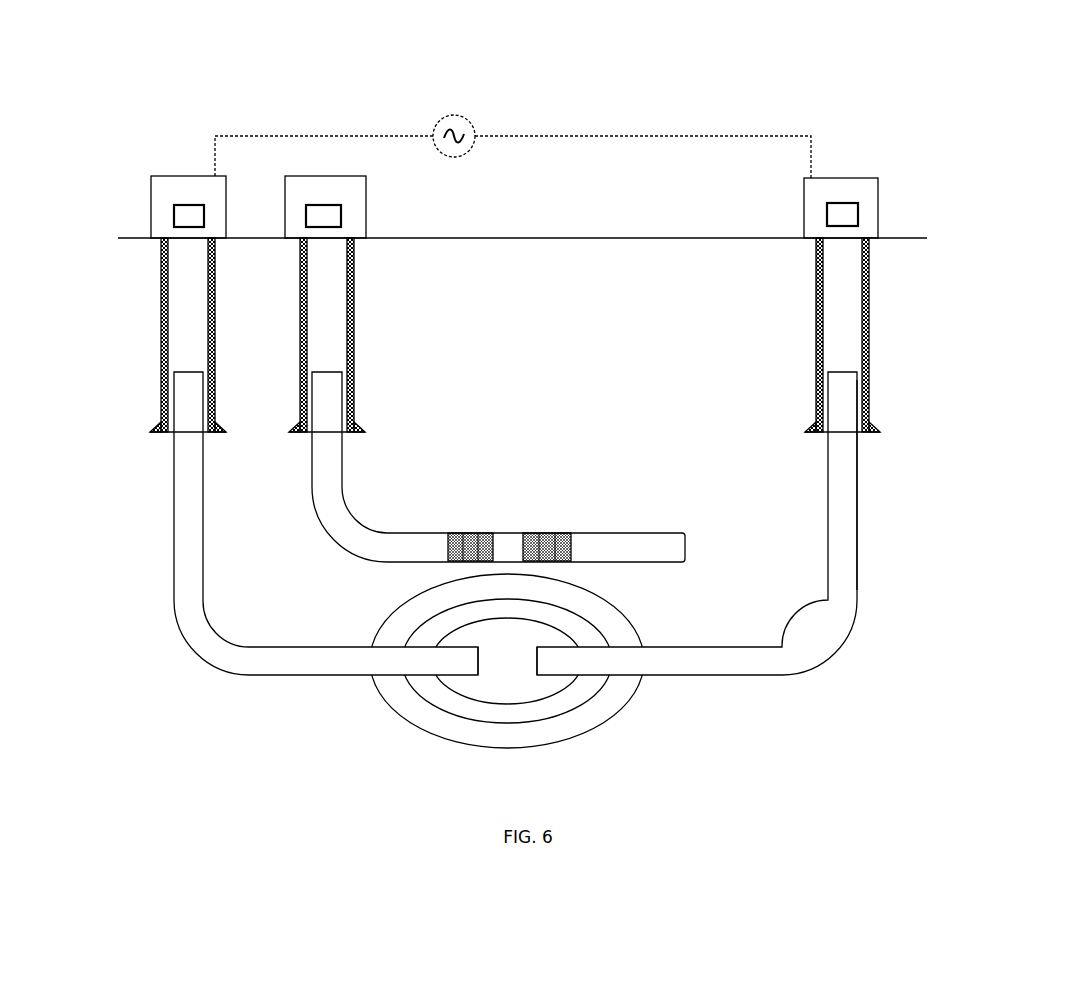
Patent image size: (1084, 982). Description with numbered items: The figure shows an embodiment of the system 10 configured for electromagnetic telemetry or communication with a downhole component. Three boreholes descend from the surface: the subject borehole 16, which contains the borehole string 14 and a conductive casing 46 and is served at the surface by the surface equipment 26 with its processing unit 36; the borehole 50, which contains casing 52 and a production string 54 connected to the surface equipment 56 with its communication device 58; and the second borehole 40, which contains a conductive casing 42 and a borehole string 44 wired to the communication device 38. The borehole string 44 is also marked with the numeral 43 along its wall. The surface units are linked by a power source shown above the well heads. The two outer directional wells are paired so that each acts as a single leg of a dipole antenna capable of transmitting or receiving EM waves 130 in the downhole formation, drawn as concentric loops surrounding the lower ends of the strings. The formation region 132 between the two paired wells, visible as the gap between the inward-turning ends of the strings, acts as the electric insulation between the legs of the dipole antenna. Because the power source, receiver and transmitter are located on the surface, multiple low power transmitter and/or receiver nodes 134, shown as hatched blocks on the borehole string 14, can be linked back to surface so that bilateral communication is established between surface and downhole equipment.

The system 10 is at (306, 71).
The surface equipment 56 is at (170, 181).
The communication device 58 is at (182, 217).
The surface equipment 26 is at (357, 198).
The processing unit 36 is at (313, 218).
The casing 46 is at (845, 187).
The communication device 38 is at (850, 217).
The borehole 50 is at (178, 275).
The casing 52 is at (162, 325).
The borehole 16 is at (330, 288).
The second borehole 40 is at (843, 273).
The casing 42 is at (870, 327).
The tube wall 43 is at (867, 485).
The production string 54 is at (185, 542).
The borehole string 14 is at (330, 495).
The borehole string 44 is at (847, 530).
The transmitter and/or receiver nodes 134 is at (533, 532).
The EM waves 130 is at (622, 608).
The formation region 132 is at (507, 661).